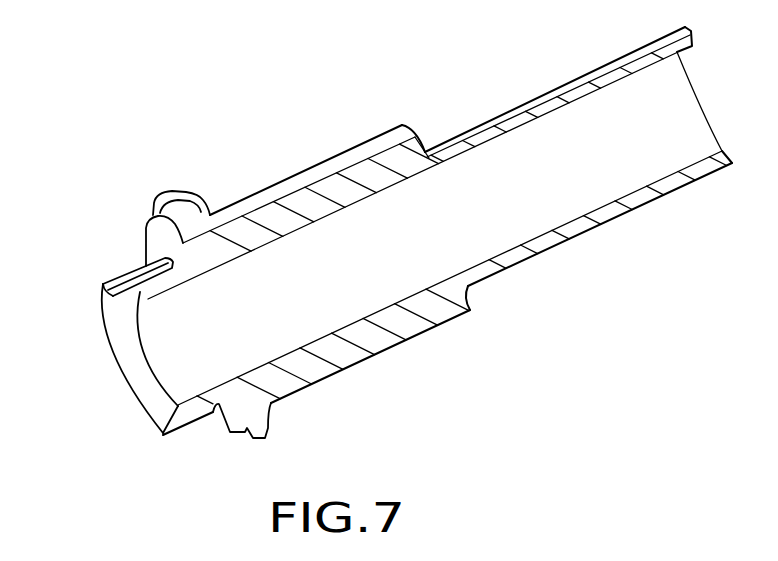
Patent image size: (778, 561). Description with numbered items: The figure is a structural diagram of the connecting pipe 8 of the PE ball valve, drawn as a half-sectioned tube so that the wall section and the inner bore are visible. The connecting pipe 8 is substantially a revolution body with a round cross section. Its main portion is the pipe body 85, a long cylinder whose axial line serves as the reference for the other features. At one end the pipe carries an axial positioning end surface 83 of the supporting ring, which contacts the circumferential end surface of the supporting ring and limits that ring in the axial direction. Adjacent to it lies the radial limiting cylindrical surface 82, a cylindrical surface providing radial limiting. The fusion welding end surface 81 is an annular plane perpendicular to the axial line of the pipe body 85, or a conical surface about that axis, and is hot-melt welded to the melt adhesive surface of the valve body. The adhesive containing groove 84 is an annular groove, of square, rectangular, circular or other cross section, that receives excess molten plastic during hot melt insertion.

The connecting pipe 8 is at (370, 147).
The fusion welding end surface 81 is at (155, 245).
The radial limiting cylindrical surface 82 is at (133, 275).
The axial positioning end surface 83 is at (103, 285).
The adhesive containing groove 84 is at (218, 405).
The pipe body 85 is at (376, 258).